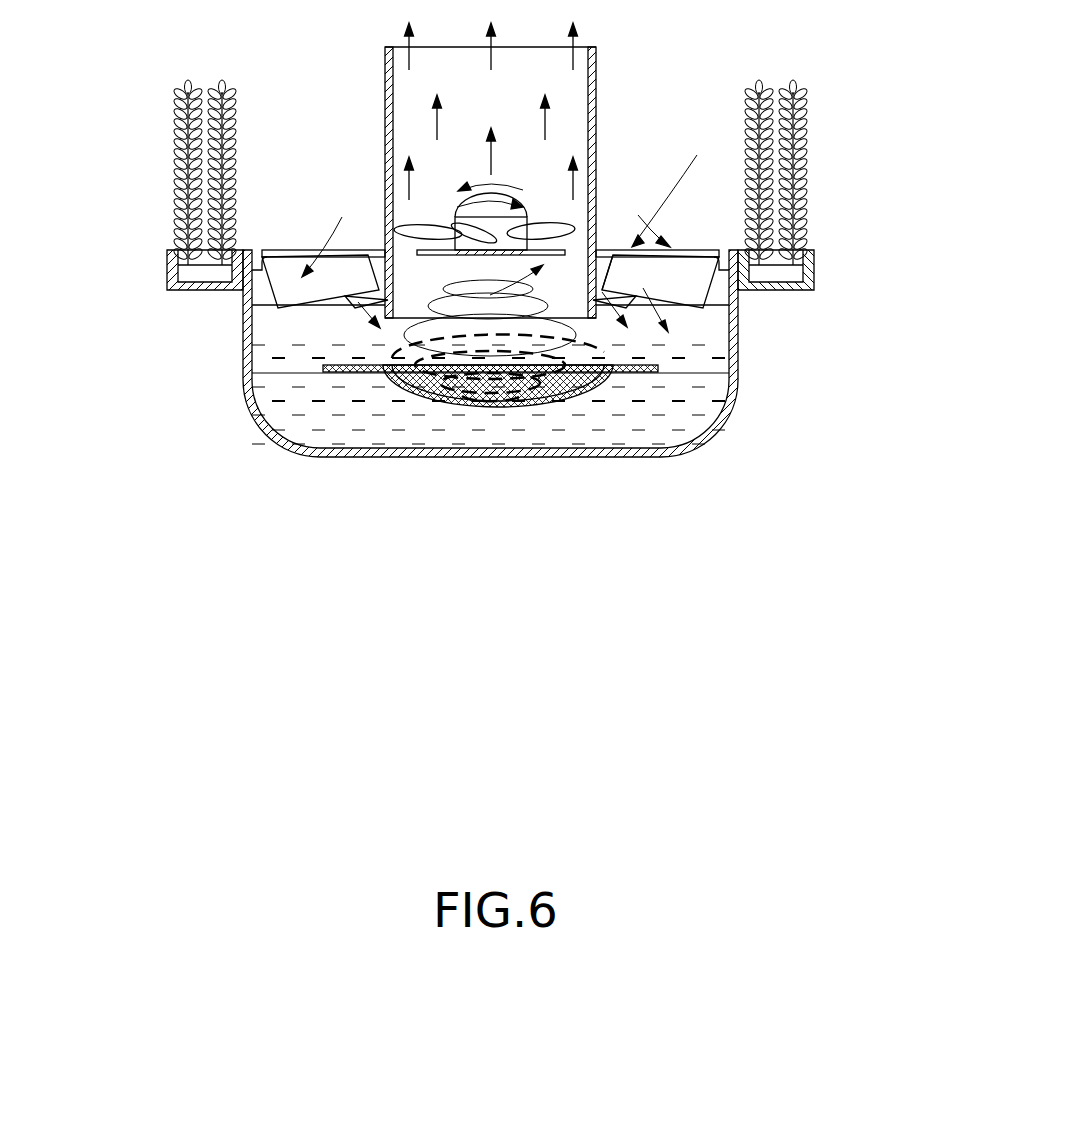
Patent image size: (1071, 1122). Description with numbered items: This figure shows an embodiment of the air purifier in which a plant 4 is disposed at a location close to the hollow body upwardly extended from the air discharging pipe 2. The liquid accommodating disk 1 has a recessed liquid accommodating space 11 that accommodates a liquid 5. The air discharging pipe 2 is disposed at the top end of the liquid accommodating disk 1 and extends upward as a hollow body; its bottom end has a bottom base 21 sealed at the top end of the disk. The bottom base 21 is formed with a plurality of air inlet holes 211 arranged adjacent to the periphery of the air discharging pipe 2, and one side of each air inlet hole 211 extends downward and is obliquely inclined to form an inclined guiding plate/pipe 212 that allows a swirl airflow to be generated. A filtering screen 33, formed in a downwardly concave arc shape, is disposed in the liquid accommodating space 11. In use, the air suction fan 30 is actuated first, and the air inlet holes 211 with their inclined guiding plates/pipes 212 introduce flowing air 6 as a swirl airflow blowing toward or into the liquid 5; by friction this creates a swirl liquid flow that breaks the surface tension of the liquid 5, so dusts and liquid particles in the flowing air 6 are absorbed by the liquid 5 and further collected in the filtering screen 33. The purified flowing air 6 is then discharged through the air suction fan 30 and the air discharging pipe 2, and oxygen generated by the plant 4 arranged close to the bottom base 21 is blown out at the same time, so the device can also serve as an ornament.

The liquid accommodating disk 1 is at (560, 372).
The liquid accommodating space 11 is at (710, 431).
The air discharging pipe 2 is at (390, 87).
The bottom base 21 is at (247, 302).
The air inlet hole 211 is at (526, 199).
The inclined guiding plate/pipe 212 is at (702, 291).
The air suction fan 30 is at (425, 230).
The filtering screen 33 is at (420, 388).
The plant 4 is at (128, 239).
The liquid 5 is at (563, 428).
The flowing air 6 is at (578, 27).